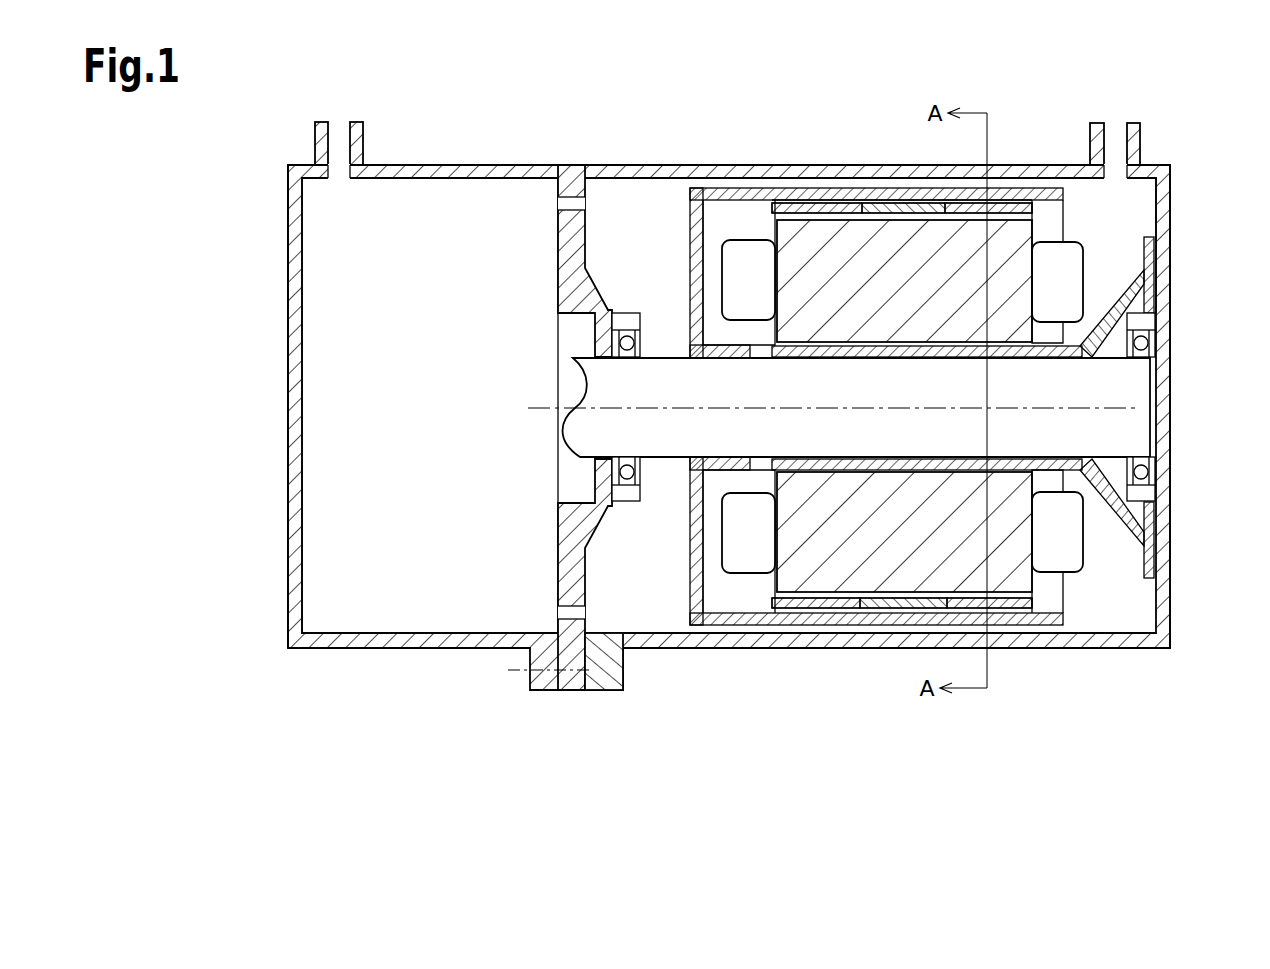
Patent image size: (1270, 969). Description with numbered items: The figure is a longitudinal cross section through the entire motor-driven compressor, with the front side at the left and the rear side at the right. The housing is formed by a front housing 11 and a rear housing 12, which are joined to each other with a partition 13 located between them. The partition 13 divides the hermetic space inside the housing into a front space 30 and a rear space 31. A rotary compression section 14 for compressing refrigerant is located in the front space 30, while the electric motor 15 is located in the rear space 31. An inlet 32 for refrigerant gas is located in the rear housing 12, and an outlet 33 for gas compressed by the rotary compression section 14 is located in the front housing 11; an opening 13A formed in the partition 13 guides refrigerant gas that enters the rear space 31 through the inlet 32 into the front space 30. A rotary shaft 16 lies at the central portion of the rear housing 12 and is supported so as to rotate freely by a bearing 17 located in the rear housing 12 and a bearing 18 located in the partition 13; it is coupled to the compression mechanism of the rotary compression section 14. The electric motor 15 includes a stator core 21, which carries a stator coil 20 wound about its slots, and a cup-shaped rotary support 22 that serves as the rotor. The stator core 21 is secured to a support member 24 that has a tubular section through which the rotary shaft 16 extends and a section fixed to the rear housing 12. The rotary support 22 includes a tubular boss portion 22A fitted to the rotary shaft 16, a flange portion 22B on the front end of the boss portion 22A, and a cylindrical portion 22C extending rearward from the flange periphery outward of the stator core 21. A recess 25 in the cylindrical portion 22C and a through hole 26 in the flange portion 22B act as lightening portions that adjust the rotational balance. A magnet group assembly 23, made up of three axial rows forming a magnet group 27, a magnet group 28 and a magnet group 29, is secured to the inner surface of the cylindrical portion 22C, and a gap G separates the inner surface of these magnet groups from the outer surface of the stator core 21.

The front housing 11 is at (470, 168).
The rear housing 12 is at (873, 167).
The partition 13 is at (558, 222).
The opening 13A is at (567, 203).
The rotary compression section 14 is at (430, 294).
The electric motor 15 is at (1071, 610).
The rotary shaft 16 is at (896, 395).
The bearing 17 is at (1150, 352).
The bearing 18 is at (612, 330).
The stator coil 20 is at (1070, 280).
The stator core 21 is at (1010, 238).
The rotary support 22 is at (760, 185).
The boss portion 22A is at (720, 470).
The flange portion 22B is at (692, 233).
The cylindrical portion 22C is at (812, 197).
The magnet group assembly 23 is at (808, 788).
The support member 24 is at (1142, 303).
The recess 25 is at (994, 212).
The through hole 26 is at (692, 548).
The magnet group 27 is at (818, 607).
The magnet group 28 is at (890, 607).
The magnet group 29 is at (1005, 607).
The front space 30 is at (322, 243).
The rear space 31 is at (1138, 202).
The inlet 32 is at (1113, 132).
The outlet 33 is at (338, 132).
The gap G is at (1065, 592).